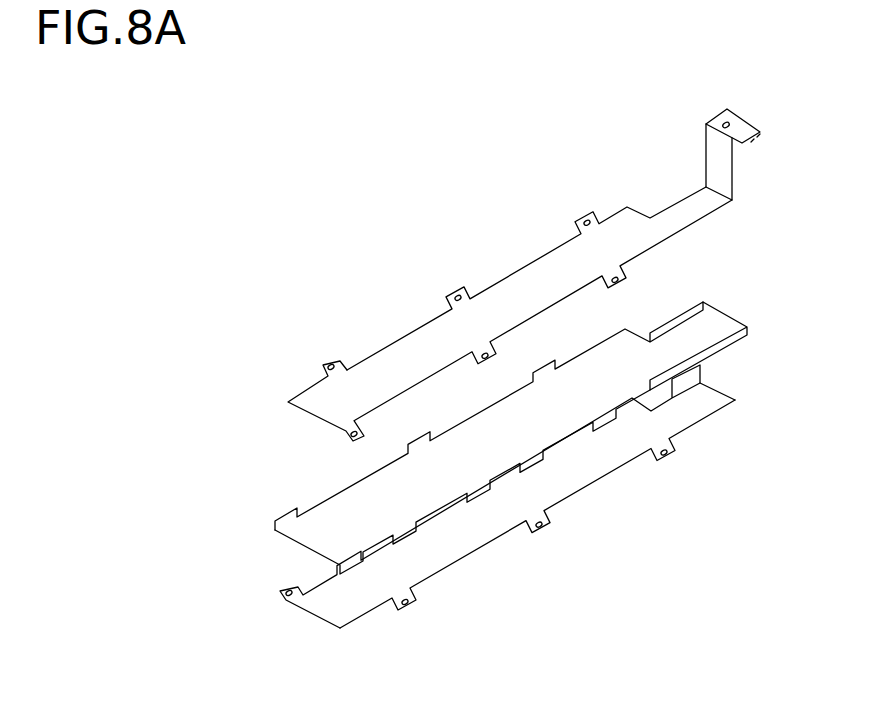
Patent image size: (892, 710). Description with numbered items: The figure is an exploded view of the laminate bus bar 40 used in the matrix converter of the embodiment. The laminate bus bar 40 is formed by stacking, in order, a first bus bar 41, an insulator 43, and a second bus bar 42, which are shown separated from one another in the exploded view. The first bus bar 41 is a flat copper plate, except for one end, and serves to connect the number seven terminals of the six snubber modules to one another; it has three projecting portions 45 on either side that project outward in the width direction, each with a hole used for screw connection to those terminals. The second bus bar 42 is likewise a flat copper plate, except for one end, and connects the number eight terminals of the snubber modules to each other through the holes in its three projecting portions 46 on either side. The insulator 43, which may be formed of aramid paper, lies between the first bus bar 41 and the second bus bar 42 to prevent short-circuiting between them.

The laminate bus bar 40 is at (330, 168).
The first bus bar 41 is at (410, 343).
The second bus bar 42 is at (442, 537).
The insulator 43 is at (350, 512).
The projecting portions 45 is at (456, 290).
The projecting portions 46 is at (285, 594).